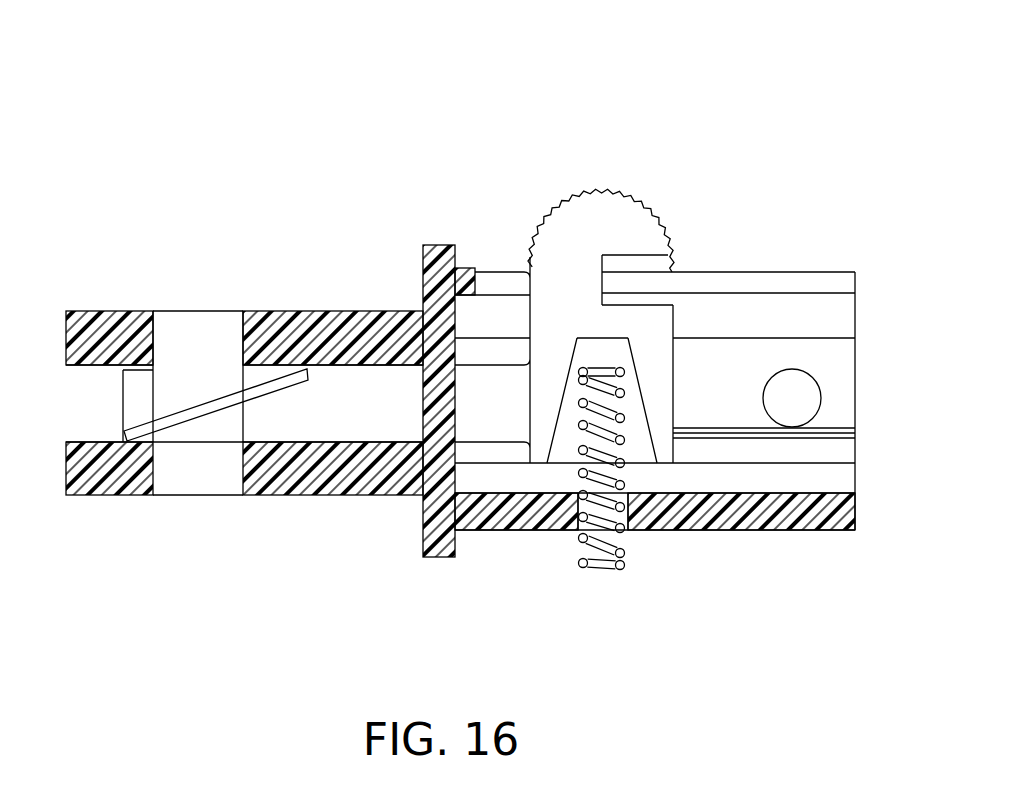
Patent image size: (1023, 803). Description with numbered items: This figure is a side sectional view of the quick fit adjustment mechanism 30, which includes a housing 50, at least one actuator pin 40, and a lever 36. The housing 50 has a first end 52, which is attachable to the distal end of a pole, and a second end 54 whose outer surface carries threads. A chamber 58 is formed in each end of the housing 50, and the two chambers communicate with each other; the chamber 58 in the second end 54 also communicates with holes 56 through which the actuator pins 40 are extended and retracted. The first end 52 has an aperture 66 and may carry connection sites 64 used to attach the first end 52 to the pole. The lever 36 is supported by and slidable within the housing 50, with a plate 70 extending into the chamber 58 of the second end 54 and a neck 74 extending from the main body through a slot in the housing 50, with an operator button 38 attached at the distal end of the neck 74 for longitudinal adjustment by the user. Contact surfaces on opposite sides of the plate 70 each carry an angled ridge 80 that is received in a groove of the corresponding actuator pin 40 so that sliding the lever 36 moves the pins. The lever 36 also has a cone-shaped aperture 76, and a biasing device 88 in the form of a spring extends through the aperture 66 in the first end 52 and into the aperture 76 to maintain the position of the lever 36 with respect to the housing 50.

The quick fit adjustment mechanism 30 is at (140, 100).
The lever 36 is at (523, 112).
The operator button 38 is at (628, 212).
The actuator pin 40 is at (176, 335).
The housing 50 is at (393, 102).
The first end 52 is at (792, 558).
The second end 54 is at (113, 538).
The hole 56 is at (244, 300).
The chamber 58 is at (347, 420).
The connection site 64 is at (800, 402).
The aperture 66 is at (577, 508).
The plate 70 is at (292, 420).
The neck 74 is at (588, 302).
The aperture 76 is at (633, 413).
The ridge 80 is at (185, 412).
The biasing device 88 is at (602, 565).